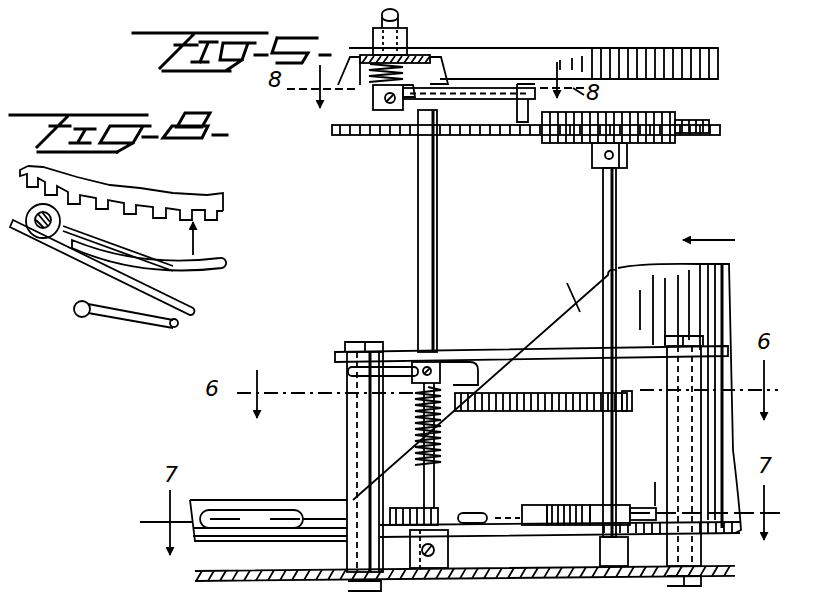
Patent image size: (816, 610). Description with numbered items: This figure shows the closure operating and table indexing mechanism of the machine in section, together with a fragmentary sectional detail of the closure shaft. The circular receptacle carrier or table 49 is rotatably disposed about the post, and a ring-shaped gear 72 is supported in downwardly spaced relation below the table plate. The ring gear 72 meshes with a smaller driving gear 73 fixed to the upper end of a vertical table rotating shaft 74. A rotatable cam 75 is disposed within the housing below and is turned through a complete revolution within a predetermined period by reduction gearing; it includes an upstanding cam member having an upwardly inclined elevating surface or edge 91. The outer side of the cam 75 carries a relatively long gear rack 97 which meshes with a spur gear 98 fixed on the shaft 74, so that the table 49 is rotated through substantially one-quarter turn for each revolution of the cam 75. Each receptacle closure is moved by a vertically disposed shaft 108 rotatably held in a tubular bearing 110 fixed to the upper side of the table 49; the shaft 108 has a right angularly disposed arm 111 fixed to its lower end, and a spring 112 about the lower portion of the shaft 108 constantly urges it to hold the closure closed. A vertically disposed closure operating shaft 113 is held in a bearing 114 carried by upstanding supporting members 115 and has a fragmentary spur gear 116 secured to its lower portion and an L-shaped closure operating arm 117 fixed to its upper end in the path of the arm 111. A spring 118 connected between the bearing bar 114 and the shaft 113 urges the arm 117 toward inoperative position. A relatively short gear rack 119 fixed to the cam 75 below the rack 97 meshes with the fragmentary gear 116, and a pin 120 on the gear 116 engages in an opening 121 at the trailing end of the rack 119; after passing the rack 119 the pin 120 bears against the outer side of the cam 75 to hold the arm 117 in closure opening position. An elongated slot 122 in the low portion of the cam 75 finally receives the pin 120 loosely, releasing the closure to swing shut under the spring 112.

In FIG. 5, the circular receptacle carrier or table 49 is at (601, 48).
In FIG. 5, the ring-shaped gear 72 is at (708, 128).
In FIG. 8, the ring-shaped gear 72 is at (224, 203).
In FIG. 5, the driving gear 73 is at (577, 147).
In FIG. 5, the vertical table rotating shaft 74 is at (618, 214).
In FIG. 5, the rotatable cam 75 is at (731, 290).
In FIG. 8, the rotatable cam 75 is at (215, 268).
In FIG. 5, the upwardly inclined elevating surface or edge 91 is at (484, 373).
In FIG. 5, the gear rack 97 is at (534, 411).
In FIG. 5, the spur gear 98 is at (632, 400).
In FIG. 5, the vertically disposed shaft 108 is at (399, 11).
In FIG. 8, the vertically disposed shaft 108 is at (34, 238).
In FIG. 5, the tubular bearing 110 is at (374, 37).
In FIG. 5, the right angularly disposed arm 111 is at (455, 88).
In FIG. 8, the right angularly disposed arm 111 is at (135, 285).
In FIG. 5, the spring 112 is at (430, 55).
In FIG. 5, the closure operating shaft 113 is at (440, 218).
In FIG. 8, the closure operating shaft 113 is at (78, 320).
In FIG. 5, the bearing 114 is at (460, 347).
In FIG. 5, the upstanding supporting members 115 is at (346, 437).
In FIG. 5, the fragmentary spur gear 116 is at (404, 508).
In FIG. 5, the L-shaped closure operating arm 117 is at (488, 136).
In FIG. 8, the L-shaped closure operating arm 117 is at (148, 327).
In FIG. 5, the spring 118 is at (463, 385).
In FIG. 5, the gear rack 119 is at (560, 505).
In FIG. 5, the pin 120 is at (477, 512).
In FIG. 5, the opening 121 is at (598, 505).
In FIG. 5, the elongated slot 122 is at (262, 522).